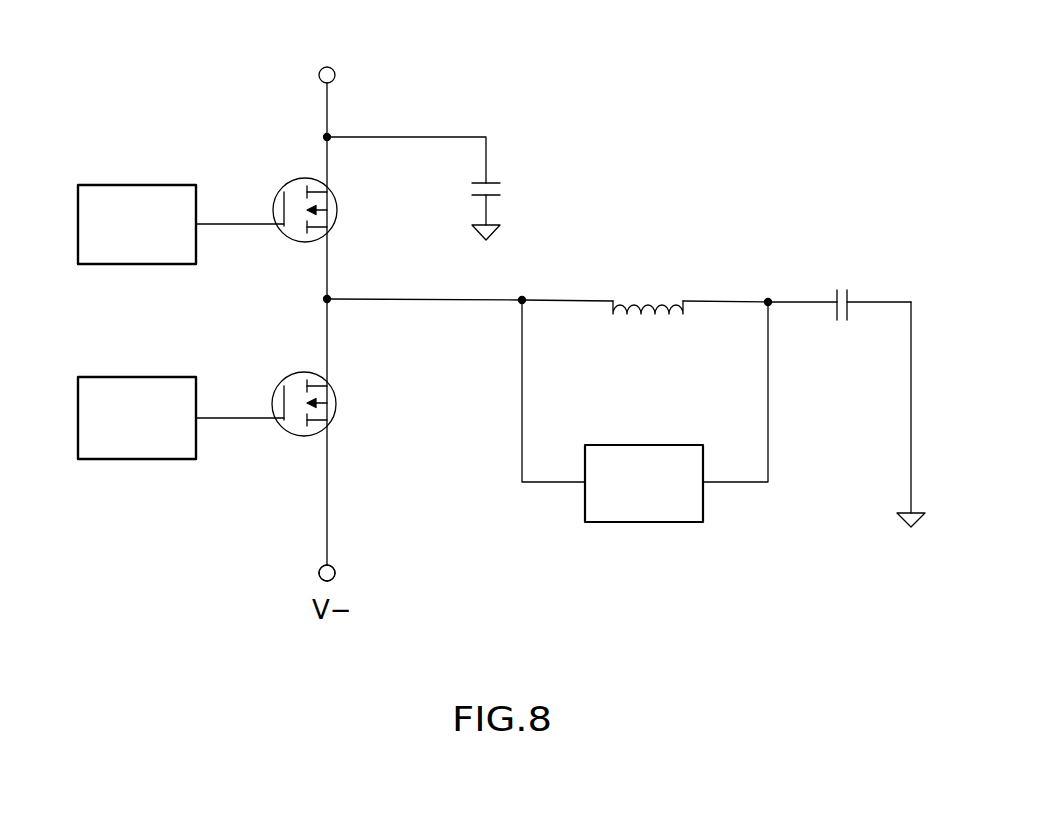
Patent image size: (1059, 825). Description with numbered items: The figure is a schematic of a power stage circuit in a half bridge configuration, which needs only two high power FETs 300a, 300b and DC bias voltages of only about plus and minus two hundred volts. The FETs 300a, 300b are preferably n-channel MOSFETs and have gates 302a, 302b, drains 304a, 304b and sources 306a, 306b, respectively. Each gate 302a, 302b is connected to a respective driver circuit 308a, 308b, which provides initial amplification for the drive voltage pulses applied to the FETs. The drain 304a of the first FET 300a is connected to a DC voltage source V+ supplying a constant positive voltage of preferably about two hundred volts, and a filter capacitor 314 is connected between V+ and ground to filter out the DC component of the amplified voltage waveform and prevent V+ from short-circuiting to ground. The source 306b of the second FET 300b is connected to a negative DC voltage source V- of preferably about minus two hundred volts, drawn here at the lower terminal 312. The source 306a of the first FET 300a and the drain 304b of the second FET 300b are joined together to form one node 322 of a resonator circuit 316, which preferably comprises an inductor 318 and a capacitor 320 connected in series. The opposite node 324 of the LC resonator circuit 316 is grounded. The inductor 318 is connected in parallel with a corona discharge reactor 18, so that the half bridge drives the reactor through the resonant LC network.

The corona discharge reactor 18 is at (643, 522).
The first high power FET 300a is at (311, 216).
The second high power FET 300b is at (321, 408).
The gate of first FET 302a is at (277, 226).
The gate of second FET 302b is at (287, 421).
The drain of first FET 304a is at (330, 187).
The drain of second FET 304b is at (329, 381).
The source of first FET 306a is at (330, 233).
The source of second FET 306b is at (330, 425).
The driver circuit 308a is at (143, 185).
The driver circuit 308b is at (132, 459).
The negative supply terminal V- 312 is at (318, 577).
The filter capacitor 314 is at (490, 182).
The resonator circuit 316 is at (773, 288).
The inductor 318 is at (650, 296).
The capacitor 320 is at (837, 312).
The node of resonator circuit 322 is at (330, 300).
The opposite node of resonator circuit 324 is at (912, 300).